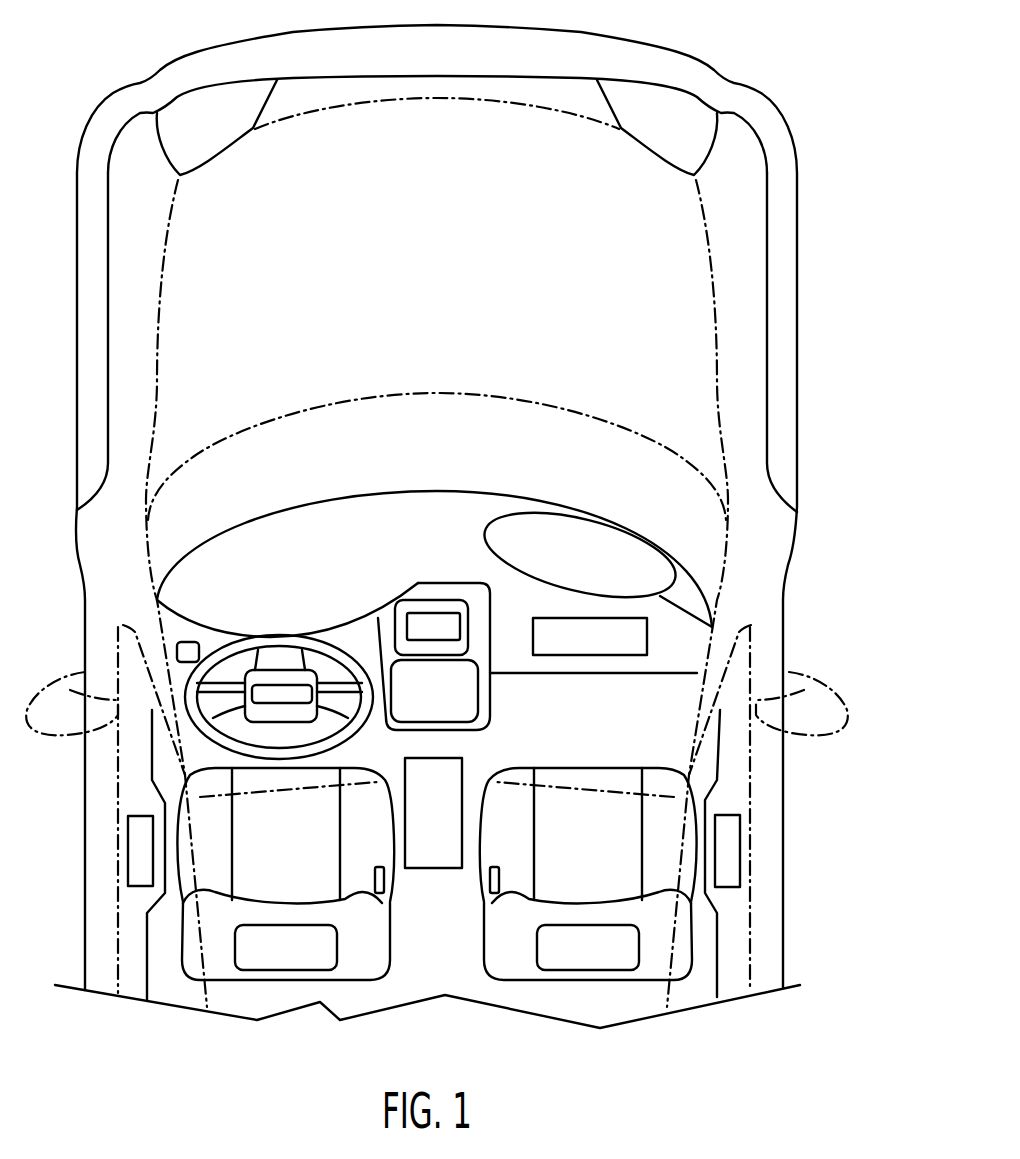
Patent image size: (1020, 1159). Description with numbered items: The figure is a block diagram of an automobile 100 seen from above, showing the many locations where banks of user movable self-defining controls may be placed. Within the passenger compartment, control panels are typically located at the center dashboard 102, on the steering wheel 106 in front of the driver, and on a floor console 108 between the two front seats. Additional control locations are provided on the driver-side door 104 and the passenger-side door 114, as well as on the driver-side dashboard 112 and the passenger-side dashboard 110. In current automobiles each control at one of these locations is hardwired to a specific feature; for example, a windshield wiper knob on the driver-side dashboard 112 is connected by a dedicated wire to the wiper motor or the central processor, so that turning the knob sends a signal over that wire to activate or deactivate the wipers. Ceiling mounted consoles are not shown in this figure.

The automobile 100 is at (758, 37).
The center dashboard 102 is at (430, 625).
The driver-side door 104 is at (140, 855).
The steering wheel 106 is at (280, 692).
The floor console 108 is at (433, 780).
The passenger-side dashboard 110 is at (620, 638).
The driver-side dashboard 112 is at (180, 648).
The passenger-side door 114 is at (727, 855).